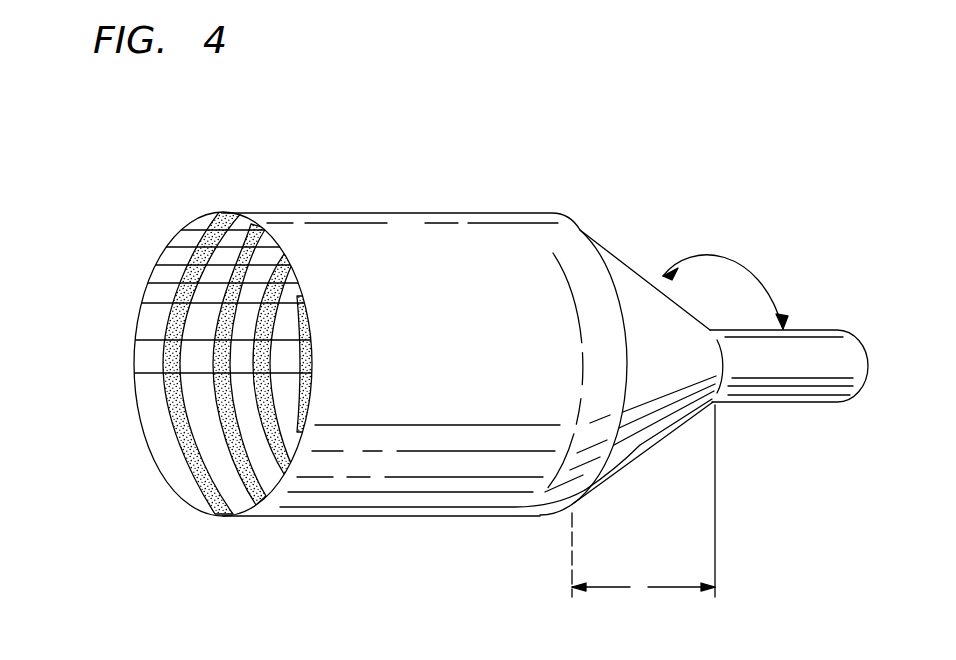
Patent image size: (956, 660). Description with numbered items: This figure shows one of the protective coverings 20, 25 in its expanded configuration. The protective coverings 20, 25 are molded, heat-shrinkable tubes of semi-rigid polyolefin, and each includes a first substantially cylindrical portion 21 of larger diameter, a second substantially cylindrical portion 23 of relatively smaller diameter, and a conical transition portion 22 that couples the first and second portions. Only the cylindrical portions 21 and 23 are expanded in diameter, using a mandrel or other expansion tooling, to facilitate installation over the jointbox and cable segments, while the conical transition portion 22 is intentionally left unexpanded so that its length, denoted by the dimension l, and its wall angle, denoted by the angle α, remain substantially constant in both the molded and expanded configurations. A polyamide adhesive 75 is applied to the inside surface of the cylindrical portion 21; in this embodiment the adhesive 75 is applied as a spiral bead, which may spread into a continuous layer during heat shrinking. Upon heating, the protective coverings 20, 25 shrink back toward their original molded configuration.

The protective covering 20 is at (230, 107).
The protective covering 25 is at (269, 107).
The first substantially cylindrical portion 21 is at (413, 238).
The conical transition portion 22 is at (695, 402).
The second substantially cylindrical portion 23 is at (832, 347).
The adhesive 75 is at (222, 297).